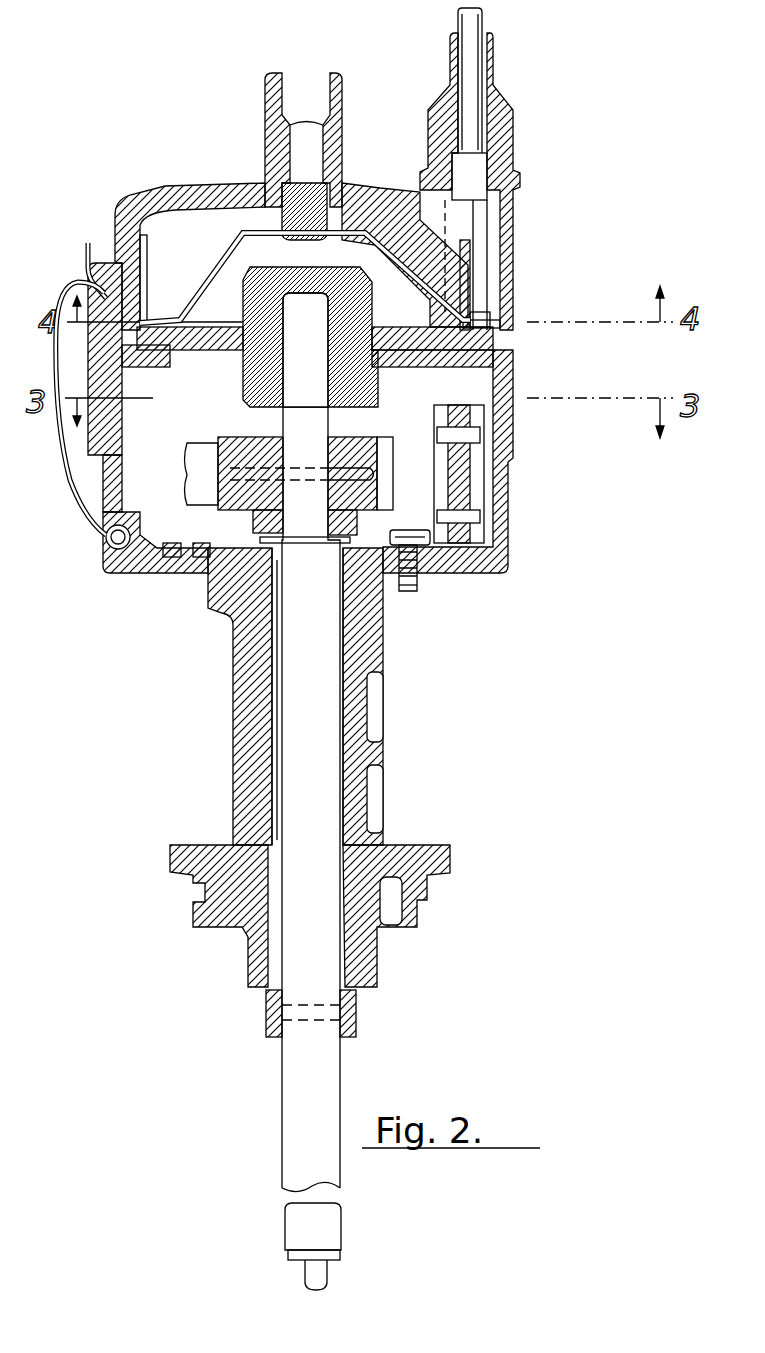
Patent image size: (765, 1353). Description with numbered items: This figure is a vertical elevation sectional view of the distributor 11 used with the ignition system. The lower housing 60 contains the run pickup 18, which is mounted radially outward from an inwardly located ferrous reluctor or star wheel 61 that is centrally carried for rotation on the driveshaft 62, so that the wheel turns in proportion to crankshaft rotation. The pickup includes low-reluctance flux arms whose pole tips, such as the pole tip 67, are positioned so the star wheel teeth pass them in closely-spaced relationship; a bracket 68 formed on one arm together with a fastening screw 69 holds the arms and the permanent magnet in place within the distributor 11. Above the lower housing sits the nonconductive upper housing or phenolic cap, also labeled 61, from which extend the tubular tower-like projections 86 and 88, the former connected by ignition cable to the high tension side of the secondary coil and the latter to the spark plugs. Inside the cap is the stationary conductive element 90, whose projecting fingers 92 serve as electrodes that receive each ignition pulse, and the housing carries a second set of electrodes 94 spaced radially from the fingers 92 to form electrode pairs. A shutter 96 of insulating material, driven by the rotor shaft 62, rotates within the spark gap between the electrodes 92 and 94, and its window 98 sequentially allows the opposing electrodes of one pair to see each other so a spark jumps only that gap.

The distributor 11 is at (545, 371).
The run pickup 18 is at (522, 474).
The lower housing 60 is at (507, 500).
The upper housing or star wheel 61 is at (513, 247).
The driveshaft 62 is at (322, 685).
The pole tip 67 is at (457, 452).
The bracket 68 is at (383, 543).
The fastening screw 69 is at (413, 585).
The tower-like projection 86 is at (343, 86).
The tower-like projection 88 is at (500, 130).
The conductive element 90 is at (217, 257).
The projecting fingers 92 is at (487, 320).
The electrodes 94 is at (470, 273).
The shutter 96 is at (140, 260).
The window 98 is at (480, 317).